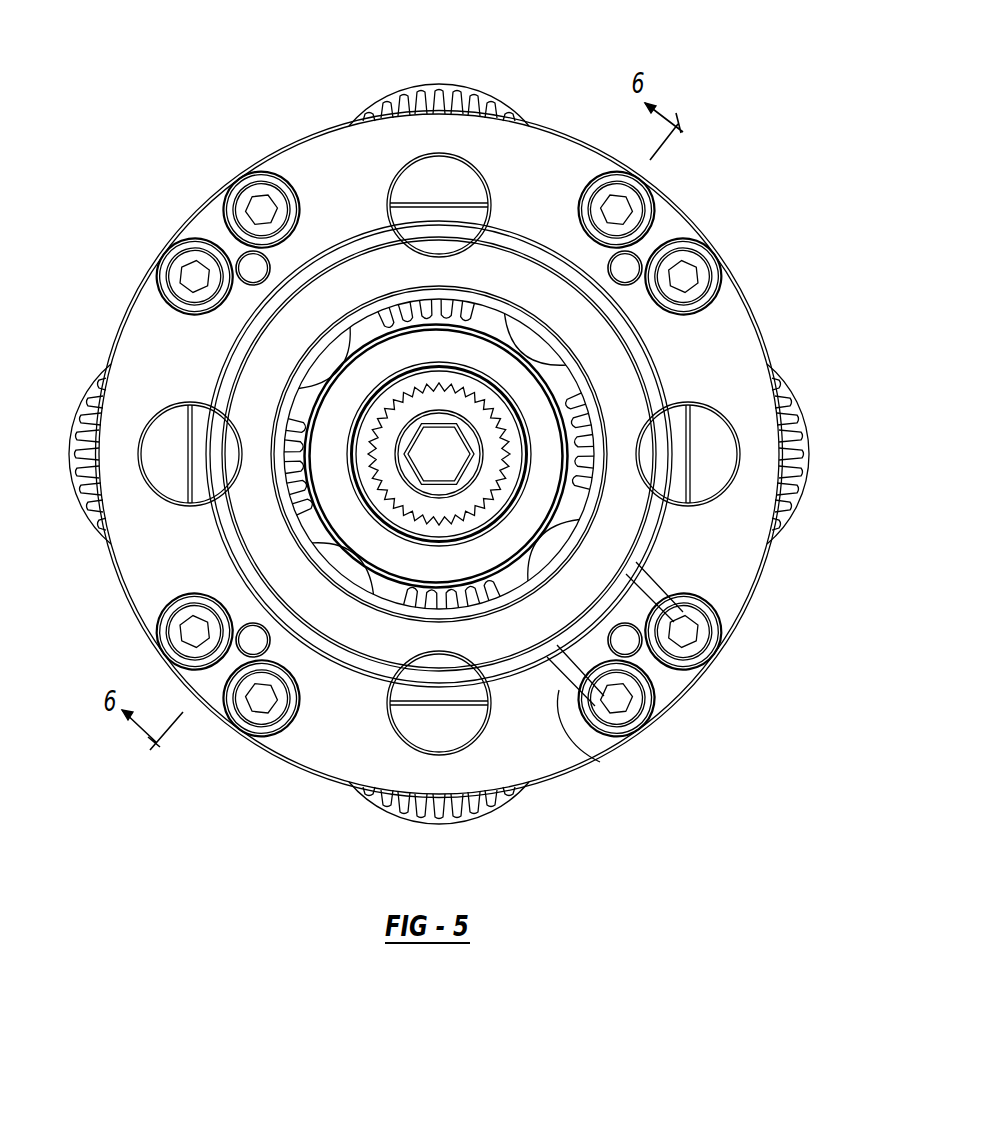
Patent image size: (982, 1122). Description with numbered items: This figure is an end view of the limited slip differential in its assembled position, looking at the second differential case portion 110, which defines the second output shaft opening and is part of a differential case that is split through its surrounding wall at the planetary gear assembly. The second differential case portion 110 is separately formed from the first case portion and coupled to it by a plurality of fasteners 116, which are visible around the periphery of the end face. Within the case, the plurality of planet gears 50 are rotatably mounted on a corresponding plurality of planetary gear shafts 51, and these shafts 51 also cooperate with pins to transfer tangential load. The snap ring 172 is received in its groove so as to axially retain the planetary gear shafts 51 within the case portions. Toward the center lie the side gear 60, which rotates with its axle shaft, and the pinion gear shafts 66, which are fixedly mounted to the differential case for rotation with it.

The second differential case portion 110 is at (548, 168).
The planet gears 50 is at (420, 176).
The planetary gear shafts 51 is at (438, 125).
The fasteners 116 is at (181, 256).
The snap ring 172 is at (578, 742).
The side gear 60 is at (415, 519).
The pinion gear shafts 66 is at (406, 474).